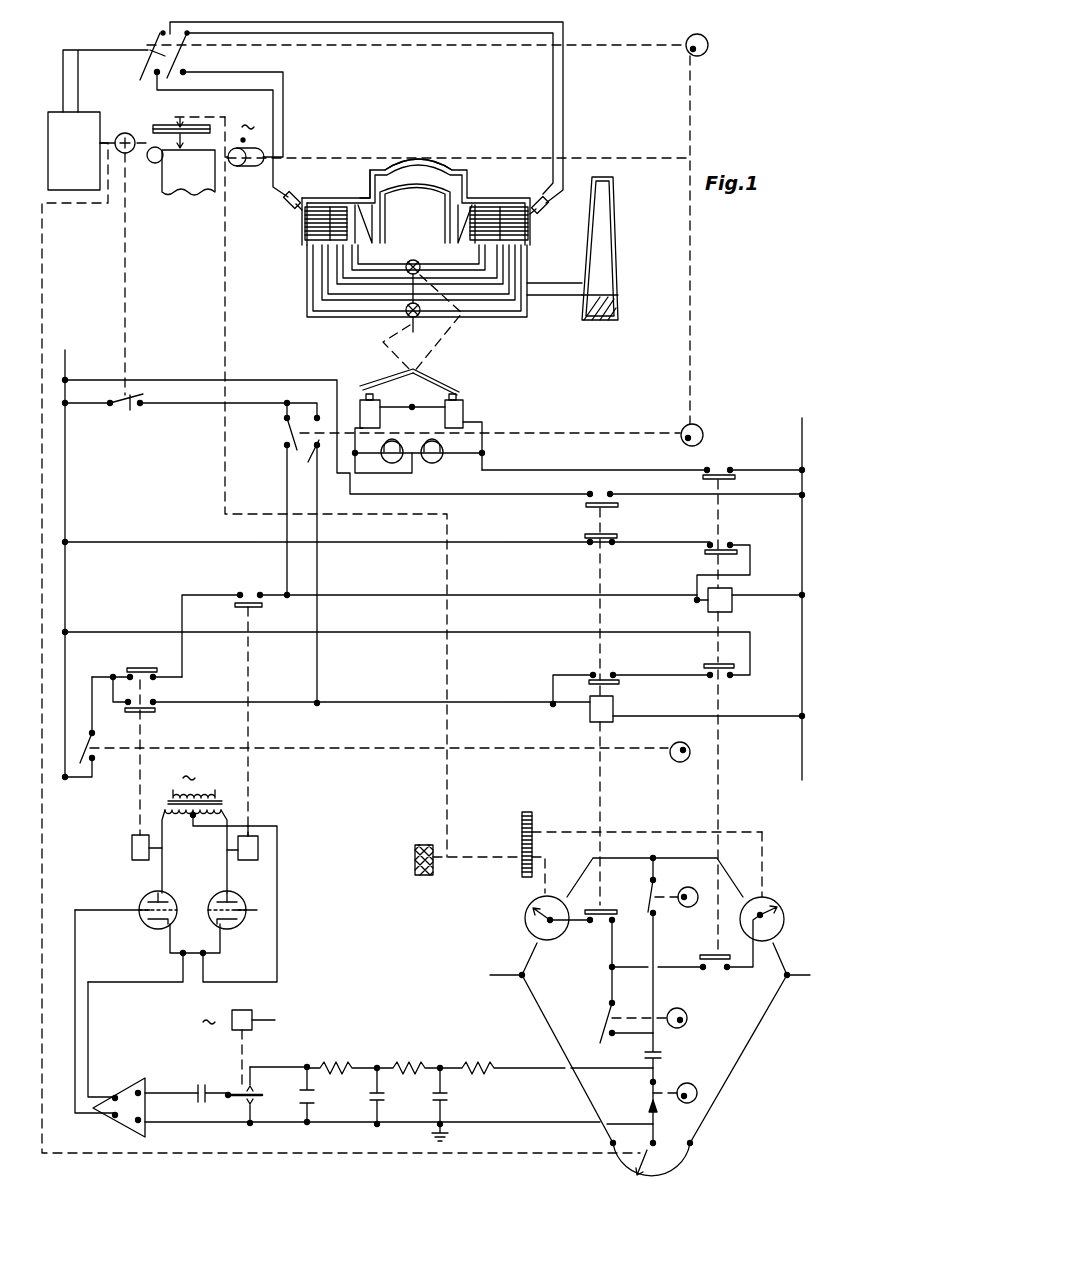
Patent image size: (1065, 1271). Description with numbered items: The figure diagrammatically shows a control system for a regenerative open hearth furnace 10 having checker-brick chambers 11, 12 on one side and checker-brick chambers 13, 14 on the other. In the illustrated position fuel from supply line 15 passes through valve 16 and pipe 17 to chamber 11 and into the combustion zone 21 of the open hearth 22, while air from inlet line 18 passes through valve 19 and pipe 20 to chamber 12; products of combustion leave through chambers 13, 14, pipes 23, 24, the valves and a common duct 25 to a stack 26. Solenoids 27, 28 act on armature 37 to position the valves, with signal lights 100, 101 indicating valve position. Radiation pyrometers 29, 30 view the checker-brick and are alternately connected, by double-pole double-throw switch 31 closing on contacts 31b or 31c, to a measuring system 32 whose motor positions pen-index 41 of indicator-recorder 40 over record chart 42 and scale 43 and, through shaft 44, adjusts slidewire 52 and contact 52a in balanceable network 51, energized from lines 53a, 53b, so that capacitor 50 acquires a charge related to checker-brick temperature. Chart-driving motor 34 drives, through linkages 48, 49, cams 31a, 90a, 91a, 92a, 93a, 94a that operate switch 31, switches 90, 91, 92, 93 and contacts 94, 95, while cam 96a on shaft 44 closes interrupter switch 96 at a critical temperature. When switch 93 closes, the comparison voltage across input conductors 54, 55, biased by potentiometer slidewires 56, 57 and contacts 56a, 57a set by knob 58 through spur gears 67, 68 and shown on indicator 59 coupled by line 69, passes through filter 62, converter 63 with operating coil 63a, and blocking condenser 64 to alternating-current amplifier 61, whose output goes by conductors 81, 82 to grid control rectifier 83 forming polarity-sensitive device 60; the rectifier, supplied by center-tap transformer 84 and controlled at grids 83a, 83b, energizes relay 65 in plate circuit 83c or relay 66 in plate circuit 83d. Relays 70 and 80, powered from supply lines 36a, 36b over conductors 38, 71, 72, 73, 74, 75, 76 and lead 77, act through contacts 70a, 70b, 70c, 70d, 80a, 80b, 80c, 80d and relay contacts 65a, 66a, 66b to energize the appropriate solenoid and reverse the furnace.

The regenerative open hearth furnace 10 is at (416, 202).
The checker-brick chamber 11 is at (343, 215).
The checker-brick chamber 12 is at (303, 222).
The checker-brick chamber 13 is at (472, 215).
The checker-brick chamber 14 is at (530, 227).
The supply line 15 is at (417, 258).
The valve 16 is at (409, 261).
The pipe 17 is at (372, 281).
The inlet line 18 is at (413, 333).
The valve 19 is at (409, 303).
The pipe 20 is at (368, 313).
The combustion zone 21 is at (363, 206).
The open hearth 22 is at (403, 172).
The pipe 23 is at (482, 262).
The pipe 24 is at (527, 266).
The common duct 25 is at (553, 297).
The stack 26 is at (620, 228).
The solenoid 27 is at (465, 414).
The solenoid 28 is at (365, 397).
The radiation pyrometer 29 is at (292, 193).
The radiation pyrometer 30 is at (538, 198).
The double pole, double throw switch 31 is at (150, 38).
The control cam 31a is at (708, 50).
The contacts 31b is at (176, 76).
The contacts 31c is at (177, 32).
The measuring system 32 is at (98, 120).
The chart-driving motor 34 is at (252, 168).
The supply line 36a is at (243, 138).
The supply line 36b is at (257, 145).
The armature 37 is at (405, 376).
The conductor 38 is at (168, 380).
The indicator-recorder 40 is at (147, 165).
The pen-index 41 is at (203, 140).
The record chart 42 is at (188, 186).
The scale 43 is at (167, 111).
The shaft 44 is at (45, 330).
The broken line 48 is at (487, 158).
The broken line 49 is at (694, 272).
The capacitor 50 is at (645, 1055).
The balanceable network 51 is at (650, 927).
The slidewire 52 is at (688, 1153).
The contact 52a is at (650, 1152).
The supply line 53a is at (512, 972).
The supply line 53b is at (805, 977).
The input conductor 54 is at (503, 1066).
The input conductor 55 is at (516, 1124).
The slidewire 56 is at (780, 905).
The movable contact 56a is at (758, 917).
The slidewire 57 is at (525, 915).
The slidewire contact 57a is at (550, 924).
The knob 58 is at (415, 858).
The indicator 59 is at (197, 125).
The polarity-sensitive device 60 is at (226, 1056).
The alternating-current amplifier 61 is at (125, 1085).
The filter 62 is at (374, 1104).
The converter 63 is at (269, 1085).
The operating coil 63a is at (258, 1050).
The direct-current blocking condenser 64 is at (201, 1085).
The relay 65 is at (253, 860).
The contacts 65a is at (237, 600).
The relay 66 is at (132, 843).
The contacts 66a is at (150, 712).
The interlock contact 66b is at (128, 668).
The spur gear 67 is at (522, 868).
The spur gear 68 is at (522, 820).
The broken line 69 is at (445, 765).
The relay 70 is at (733, 605).
The contacts 70a is at (725, 468).
The contacts 70b is at (730, 545).
The contacts 70c is at (722, 677).
The contacts 70d is at (720, 968).
The conductor 71 is at (150, 542).
The conductor 72 is at (760, 595).
The conductor 73 is at (348, 632).
The conductor 74 is at (202, 405).
The conductor 75 is at (320, 575).
The conductor 76 is at (285, 505).
The lead 77 is at (613, 985).
The relay 80 is at (590, 712).
The contacts 80a is at (584, 498).
The interlock contacts 80b is at (605, 673).
The contacts 80c is at (614, 540).
The contacts 80d is at (602, 908).
The conductor 81 is at (75, 1015).
The conductor 82 is at (90, 1042).
The grid control rectifier 83 is at (176, 904).
The grid 83a is at (243, 915).
The grid 83b is at (150, 915).
The plate circuit 83c is at (226, 873).
The plate circuit 83d is at (160, 875).
The center tap transformer 84 is at (200, 790).
The switch 90 is at (92, 752).
The cam 90a is at (672, 760).
The shorting switch 91 is at (645, 1096).
The cam 91a is at (692, 1084).
The switch 92 is at (650, 906).
The cam 92a is at (707, 878).
The switch 93 is at (600, 1022).
The cam 93a is at (688, 1016).
The contact 94 is at (283, 432).
The cam 94a is at (700, 425).
The contact 95 is at (304, 449).
The interrupter switch 96 is at (130, 408).
The cam 96a is at (123, 133).
The signal light 100 is at (440, 461).
The signal lamp 101 is at (396, 441).